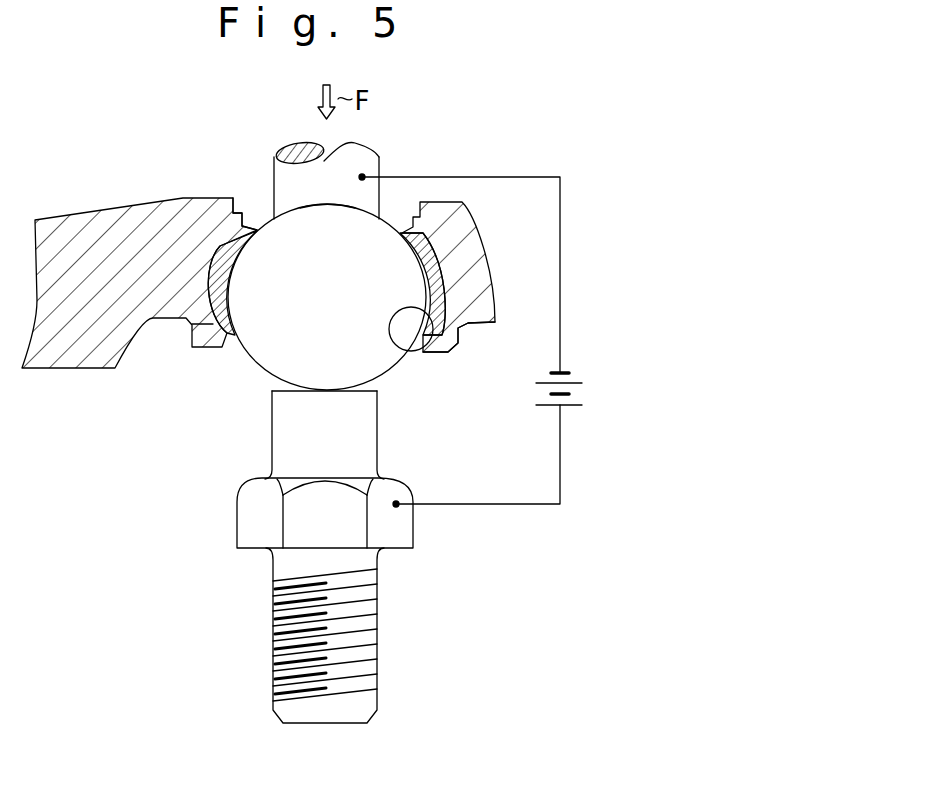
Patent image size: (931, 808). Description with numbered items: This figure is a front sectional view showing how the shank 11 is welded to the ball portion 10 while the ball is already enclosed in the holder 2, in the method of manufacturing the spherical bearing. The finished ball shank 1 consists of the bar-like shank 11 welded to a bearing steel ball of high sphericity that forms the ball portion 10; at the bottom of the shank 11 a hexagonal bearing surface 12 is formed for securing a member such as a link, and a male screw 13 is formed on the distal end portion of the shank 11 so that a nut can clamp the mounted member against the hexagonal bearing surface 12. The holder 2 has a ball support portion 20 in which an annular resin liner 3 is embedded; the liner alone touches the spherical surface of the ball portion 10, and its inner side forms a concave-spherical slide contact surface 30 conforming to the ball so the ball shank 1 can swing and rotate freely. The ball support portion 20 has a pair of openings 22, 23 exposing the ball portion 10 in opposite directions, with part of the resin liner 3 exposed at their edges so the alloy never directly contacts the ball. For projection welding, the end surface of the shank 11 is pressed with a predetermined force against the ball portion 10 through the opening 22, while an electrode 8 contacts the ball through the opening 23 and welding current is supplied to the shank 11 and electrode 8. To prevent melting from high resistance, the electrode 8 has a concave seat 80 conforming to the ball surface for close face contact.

The ball shank 1 is at (250, 691).
The holder 2 is at (94, 371).
The resin liner 3 is at (443, 280).
The electrode 8 is at (284, 170).
The ball portion 10 is at (260, 375).
The shank 11 is at (283, 453).
The hexagonal bearing surface 12 is at (247, 521).
The male screw 13 is at (276, 667).
The ball support portion 20 is at (473, 312).
The opening 22 is at (234, 349).
The opening 23 is at (246, 221).
The slide contact surface 30 is at (410, 351).
The concave seat 80 is at (338, 205).